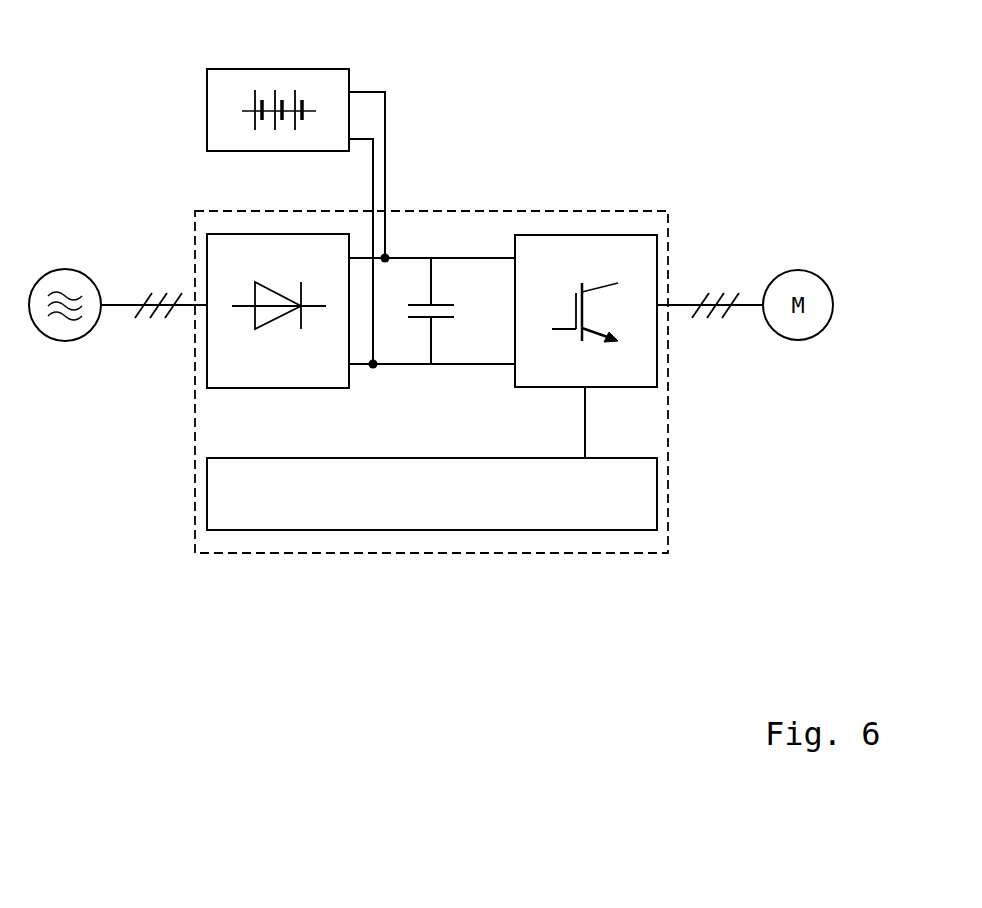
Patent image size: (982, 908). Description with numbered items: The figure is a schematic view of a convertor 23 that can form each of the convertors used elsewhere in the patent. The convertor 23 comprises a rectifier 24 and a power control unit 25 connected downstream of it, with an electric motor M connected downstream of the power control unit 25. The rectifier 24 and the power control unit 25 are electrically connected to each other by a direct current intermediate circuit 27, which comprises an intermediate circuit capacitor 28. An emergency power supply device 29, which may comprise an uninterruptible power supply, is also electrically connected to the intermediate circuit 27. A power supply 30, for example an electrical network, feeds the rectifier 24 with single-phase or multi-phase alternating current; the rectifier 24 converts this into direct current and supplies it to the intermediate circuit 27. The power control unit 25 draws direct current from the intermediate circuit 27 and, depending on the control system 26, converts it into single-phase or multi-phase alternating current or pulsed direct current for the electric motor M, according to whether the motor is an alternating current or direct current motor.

The convertor 23 is at (635, 211).
The rectifier 24 is at (217, 250).
The power control unit 25 is at (572, 247).
The control system 26 is at (643, 513).
The direct current intermediate circuit 27 is at (485, 257).
The intermediate circuit capacitor 28 is at (452, 317).
The emergency power supply device 29 is at (330, 73).
The power supply 30 is at (63, 341).